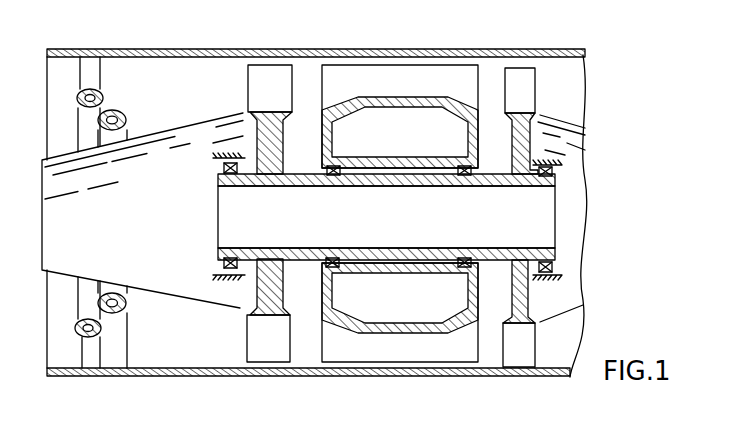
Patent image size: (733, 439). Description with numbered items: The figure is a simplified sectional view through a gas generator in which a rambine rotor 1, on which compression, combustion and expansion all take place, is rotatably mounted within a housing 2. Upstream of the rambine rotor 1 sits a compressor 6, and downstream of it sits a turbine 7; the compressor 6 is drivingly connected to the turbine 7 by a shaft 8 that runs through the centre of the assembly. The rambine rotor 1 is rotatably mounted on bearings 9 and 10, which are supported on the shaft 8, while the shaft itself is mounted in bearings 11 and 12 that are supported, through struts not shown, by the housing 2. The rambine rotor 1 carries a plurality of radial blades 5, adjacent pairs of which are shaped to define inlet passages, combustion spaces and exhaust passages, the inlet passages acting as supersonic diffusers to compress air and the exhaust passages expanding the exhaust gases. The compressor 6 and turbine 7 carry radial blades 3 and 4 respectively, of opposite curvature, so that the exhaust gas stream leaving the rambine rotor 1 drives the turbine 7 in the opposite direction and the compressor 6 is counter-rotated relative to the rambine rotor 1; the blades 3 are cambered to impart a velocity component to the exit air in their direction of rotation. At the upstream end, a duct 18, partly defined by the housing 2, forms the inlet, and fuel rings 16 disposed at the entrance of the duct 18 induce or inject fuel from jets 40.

The rambine rotor 1 is at (422, 98).
The housing 2 is at (77, 373).
The radial blades 3 is at (273, 90).
The radial blades 4 is at (523, 98).
The radial blades 5 is at (370, 90).
The compressor 6 is at (278, 157).
The turbine 7 is at (510, 147).
The shaft 8 is at (497, 250).
The bearing 9 is at (322, 263).
The bearing 10 is at (465, 262).
The bearing 11 is at (213, 162).
The bearing 12 is at (553, 170).
The fuel rings 16 is at (77, 320).
The duct 18 is at (163, 130).
The jets 40 is at (103, 333).